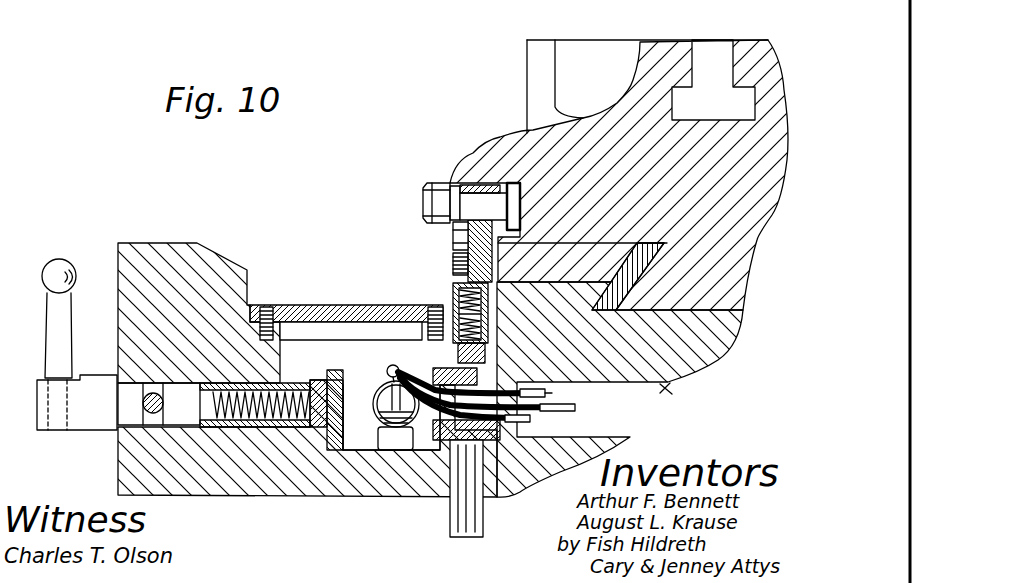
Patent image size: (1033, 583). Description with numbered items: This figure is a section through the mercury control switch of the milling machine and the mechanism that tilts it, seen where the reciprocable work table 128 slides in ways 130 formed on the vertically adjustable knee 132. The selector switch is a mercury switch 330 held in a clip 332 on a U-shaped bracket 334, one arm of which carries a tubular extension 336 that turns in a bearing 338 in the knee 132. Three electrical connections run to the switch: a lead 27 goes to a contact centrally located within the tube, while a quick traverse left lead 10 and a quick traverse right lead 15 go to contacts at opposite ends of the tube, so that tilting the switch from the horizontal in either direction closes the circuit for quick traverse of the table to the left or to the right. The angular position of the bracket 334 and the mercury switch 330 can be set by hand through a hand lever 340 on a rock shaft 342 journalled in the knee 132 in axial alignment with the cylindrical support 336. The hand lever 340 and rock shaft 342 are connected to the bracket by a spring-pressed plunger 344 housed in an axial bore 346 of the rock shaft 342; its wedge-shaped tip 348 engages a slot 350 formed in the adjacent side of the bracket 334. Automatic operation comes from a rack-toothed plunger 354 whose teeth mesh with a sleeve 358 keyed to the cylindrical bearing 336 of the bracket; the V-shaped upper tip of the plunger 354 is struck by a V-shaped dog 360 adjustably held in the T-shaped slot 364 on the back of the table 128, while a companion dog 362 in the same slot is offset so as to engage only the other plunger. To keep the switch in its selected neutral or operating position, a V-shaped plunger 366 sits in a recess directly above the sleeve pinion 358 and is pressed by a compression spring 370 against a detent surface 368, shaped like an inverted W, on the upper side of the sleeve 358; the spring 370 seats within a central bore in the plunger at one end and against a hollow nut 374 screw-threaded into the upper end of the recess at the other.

The work table 128 is at (757, 203).
The ways 130 is at (663, 275).
The knee 132 is at (180, 247).
The bearing 338 is at (665, 393).
The hand lever 340 is at (56, 330).
The rock shaft 342 is at (100, 432).
The spring-pressed plunger 344 is at (325, 385).
The axial bore 346 is at (222, 427).
The wedge-shaped tip 348 is at (322, 428).
The slot 350 is at (350, 398).
The U-shaped bracket 334 is at (362, 478).
The clip 332 is at (381, 407).
The mercury switch 330 is at (387, 397).
The quick traverse right lead 15 is at (524, 392).
The lead 27 is at (575, 408).
The quick traverse left lead 10 is at (530, 417).
The detent surface 368 is at (548, 380).
The tubular extension 336 is at (512, 440).
The plunger 354 is at (453, 262).
The hollow nut 374 is at (496, 252).
The V-shaped dog 360 is at (458, 248).
The V-shaped plunger 366 is at (452, 303).
The compression spring 370 is at (452, 283).
The sleeve 358 is at (463, 367).
The V-shaped dog 362 is at (478, 185).
The T-shaped slot 364 is at (516, 183).